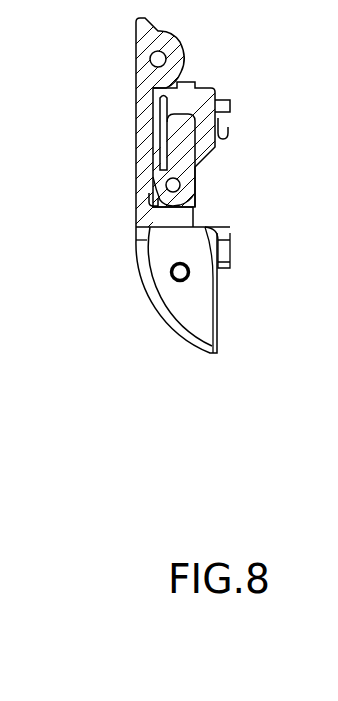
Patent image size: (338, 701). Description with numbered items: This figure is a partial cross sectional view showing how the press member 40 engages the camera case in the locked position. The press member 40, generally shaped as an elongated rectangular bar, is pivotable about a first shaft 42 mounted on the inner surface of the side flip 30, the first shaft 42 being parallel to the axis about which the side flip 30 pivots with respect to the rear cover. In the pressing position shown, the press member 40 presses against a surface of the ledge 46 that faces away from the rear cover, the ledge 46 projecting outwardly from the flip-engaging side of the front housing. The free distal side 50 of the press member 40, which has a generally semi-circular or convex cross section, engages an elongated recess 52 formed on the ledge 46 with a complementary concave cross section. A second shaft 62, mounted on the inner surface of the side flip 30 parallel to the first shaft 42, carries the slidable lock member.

The side flip 30 is at (158, 308).
The press member 40 is at (182, 178).
The first shaft 42 is at (170, 183).
The ledge 46 is at (183, 87).
The free distal side 50 is at (175, 121).
The elongated recess 52 is at (193, 124).
The second shaft 62 is at (171, 272).